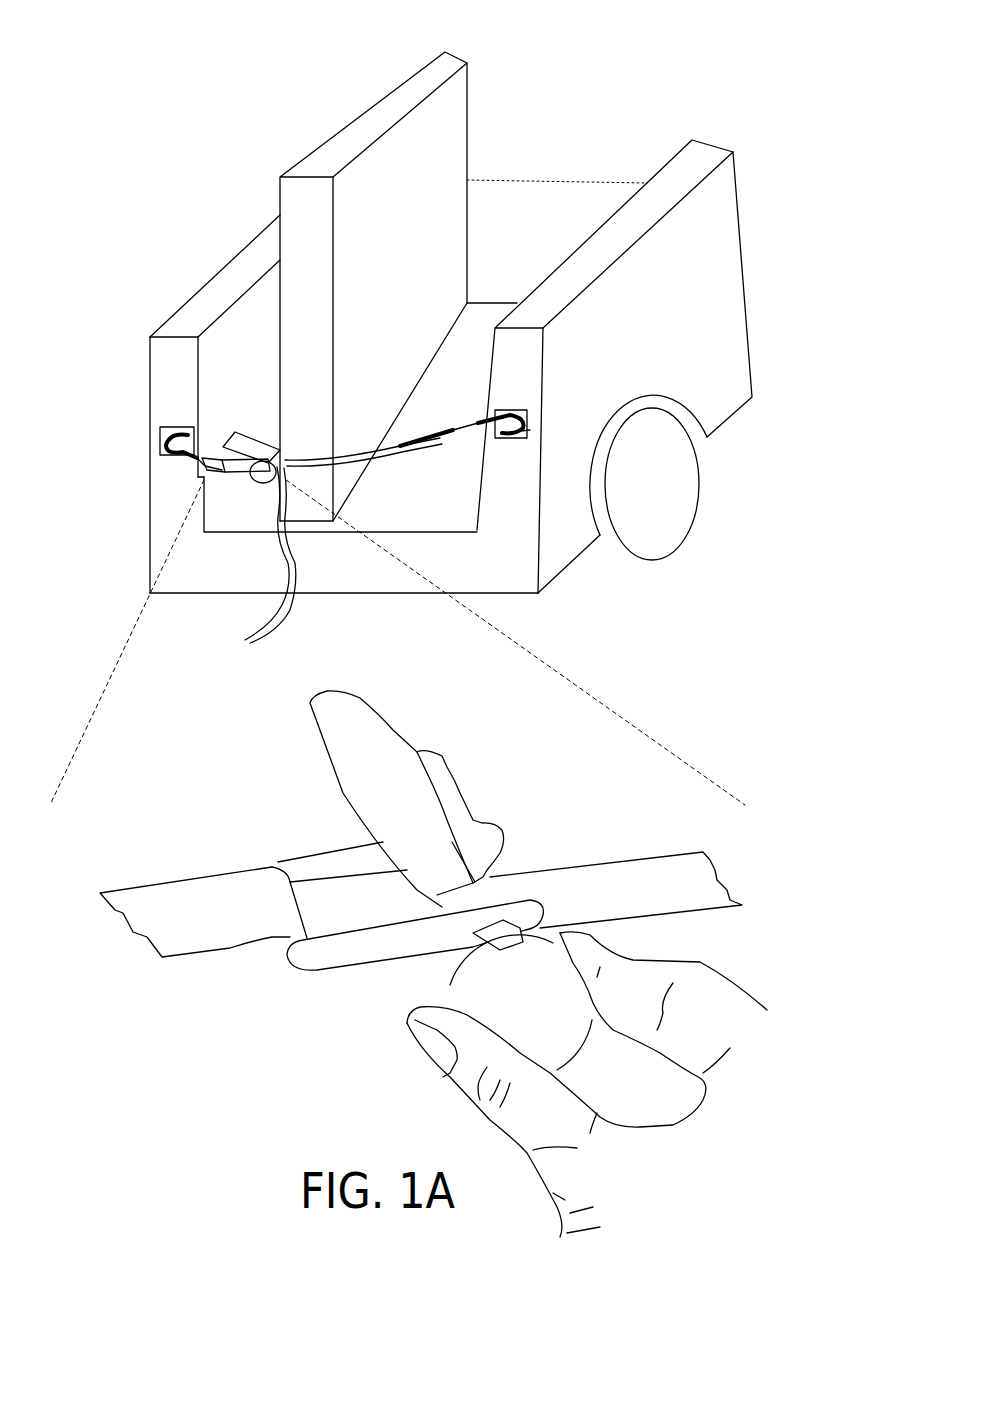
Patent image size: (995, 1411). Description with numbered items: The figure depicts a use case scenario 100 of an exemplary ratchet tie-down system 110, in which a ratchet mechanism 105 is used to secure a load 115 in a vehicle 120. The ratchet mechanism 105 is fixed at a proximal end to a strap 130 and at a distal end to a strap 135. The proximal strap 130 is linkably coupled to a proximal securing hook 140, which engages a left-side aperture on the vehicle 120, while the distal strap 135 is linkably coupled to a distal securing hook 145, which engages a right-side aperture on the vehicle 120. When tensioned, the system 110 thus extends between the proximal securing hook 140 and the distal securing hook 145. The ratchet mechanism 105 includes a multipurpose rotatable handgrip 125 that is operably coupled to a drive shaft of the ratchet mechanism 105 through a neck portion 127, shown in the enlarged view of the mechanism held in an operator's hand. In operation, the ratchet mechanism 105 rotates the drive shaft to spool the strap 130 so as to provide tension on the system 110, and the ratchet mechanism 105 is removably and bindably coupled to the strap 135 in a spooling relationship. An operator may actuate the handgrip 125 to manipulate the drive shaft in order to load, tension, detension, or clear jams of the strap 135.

The use case scenario 100 is at (117, 98).
The ratchet mechanism 105 is at (238, 414).
The ratchet tie-down system 110 is at (407, 432).
The load 115 is at (470, 108).
The vehicle 120 is at (178, 313).
The multipurpose rotatable handgrip 125 is at (262, 486).
The neck portion 127 is at (498, 898).
The strap 130 is at (198, 477).
The strap 135 is at (442, 437).
The proximal securing hook 140 is at (160, 432).
The distal securing hook 145 is at (530, 430).